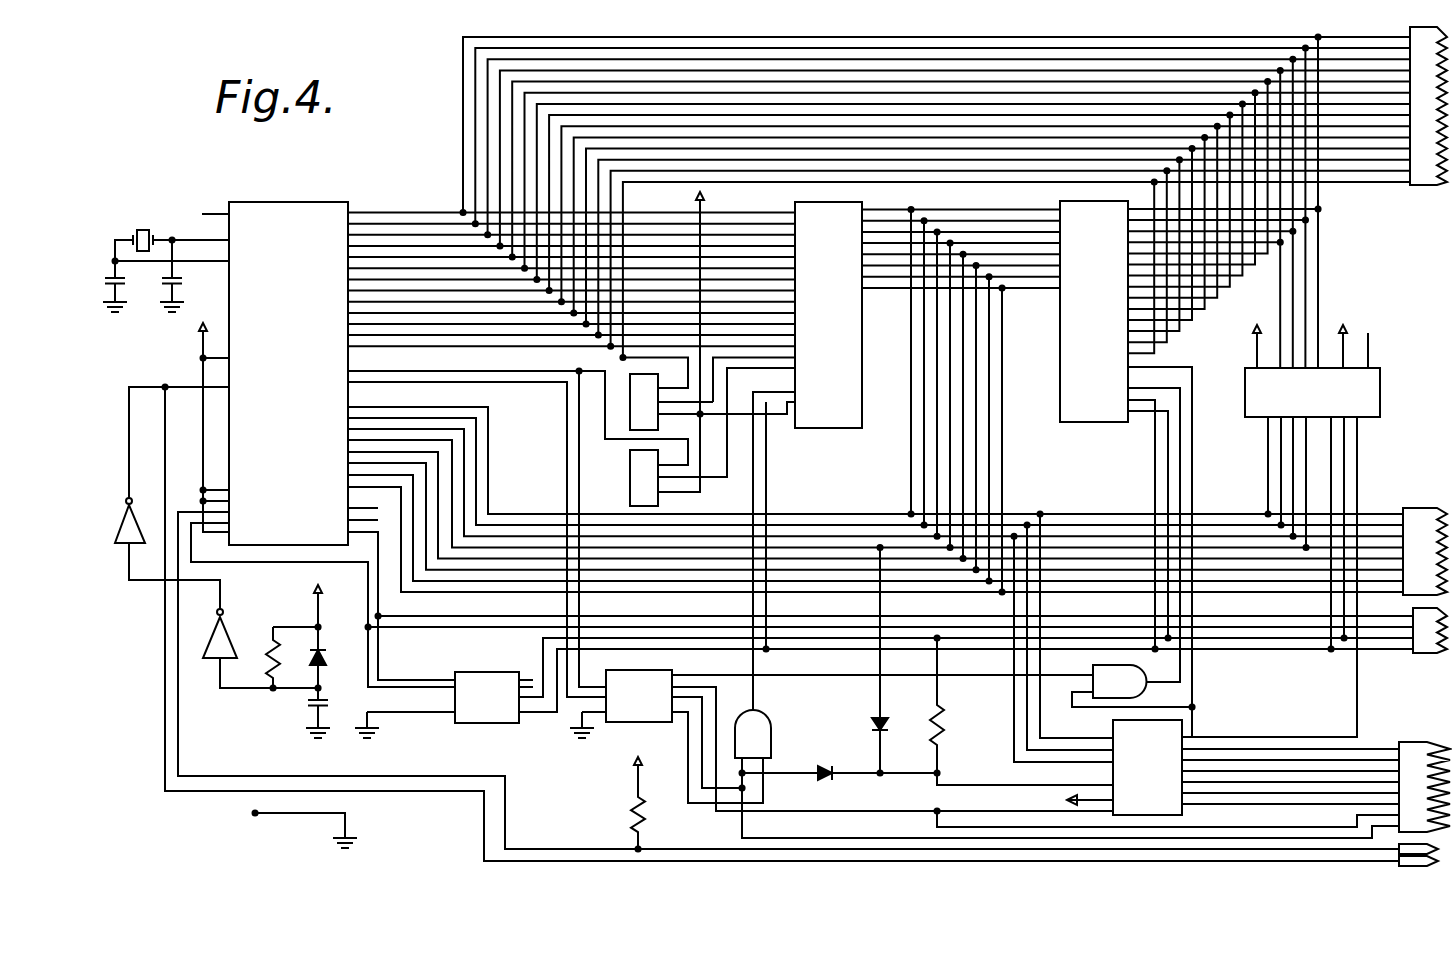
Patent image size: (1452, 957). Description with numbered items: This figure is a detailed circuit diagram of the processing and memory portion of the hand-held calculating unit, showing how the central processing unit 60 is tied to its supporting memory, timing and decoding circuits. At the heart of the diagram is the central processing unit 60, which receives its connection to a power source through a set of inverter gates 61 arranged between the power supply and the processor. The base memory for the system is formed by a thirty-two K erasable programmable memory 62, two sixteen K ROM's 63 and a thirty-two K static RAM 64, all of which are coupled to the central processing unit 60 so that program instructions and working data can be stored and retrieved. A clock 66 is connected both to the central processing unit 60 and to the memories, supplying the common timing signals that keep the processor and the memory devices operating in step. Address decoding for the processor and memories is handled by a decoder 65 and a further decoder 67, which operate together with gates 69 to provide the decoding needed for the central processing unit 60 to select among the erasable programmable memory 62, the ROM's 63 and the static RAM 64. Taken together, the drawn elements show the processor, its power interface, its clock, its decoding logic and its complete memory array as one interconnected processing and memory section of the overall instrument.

The central processing unit 60 is at (264, 345).
The inverter gates 61 is at (131, 543).
The 32K erasable programmable memory 62 is at (846, 401).
The 16K ROM's 63 is at (630, 473).
The 32K static RAM 64 is at (1078, 347).
The decoder 65 is at (1132, 806).
The clock 66 is at (1245, 398).
The decoder 67 is at (617, 723).
The gates 69 is at (764, 726).